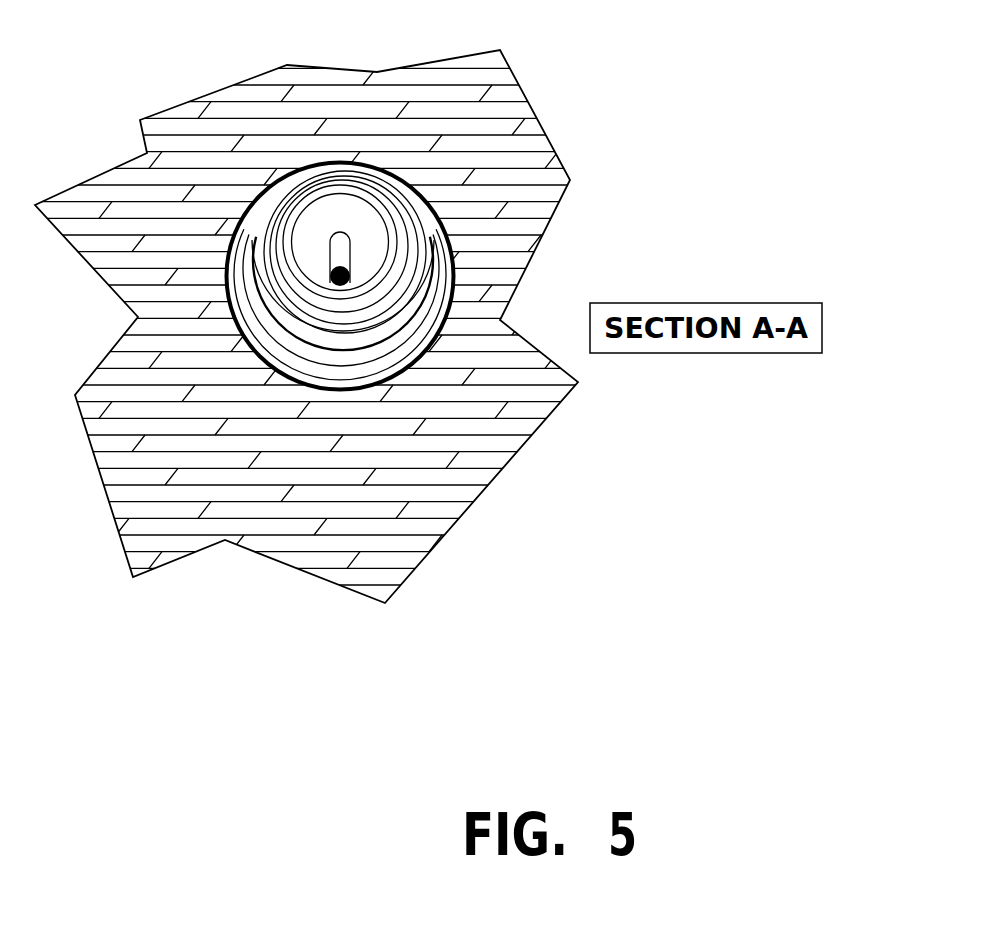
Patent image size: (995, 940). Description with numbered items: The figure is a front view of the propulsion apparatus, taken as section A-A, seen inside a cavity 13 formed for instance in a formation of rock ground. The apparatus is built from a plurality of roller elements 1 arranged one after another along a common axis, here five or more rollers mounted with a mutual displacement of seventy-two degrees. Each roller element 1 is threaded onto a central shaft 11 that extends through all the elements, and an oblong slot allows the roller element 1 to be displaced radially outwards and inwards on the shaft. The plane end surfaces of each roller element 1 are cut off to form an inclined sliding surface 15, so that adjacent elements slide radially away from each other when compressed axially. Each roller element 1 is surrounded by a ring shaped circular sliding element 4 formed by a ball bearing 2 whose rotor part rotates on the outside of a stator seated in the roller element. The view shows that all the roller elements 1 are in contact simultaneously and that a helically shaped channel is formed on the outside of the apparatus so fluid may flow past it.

The roller element 1 is at (370, 227).
The ball bearing 2 is at (370, 190).
The sliding element 4 is at (417, 228).
The inclined sliding surface 15 is at (413, 253).
The cavity 13 is at (450, 320).
The central shaft 11 is at (350, 280).